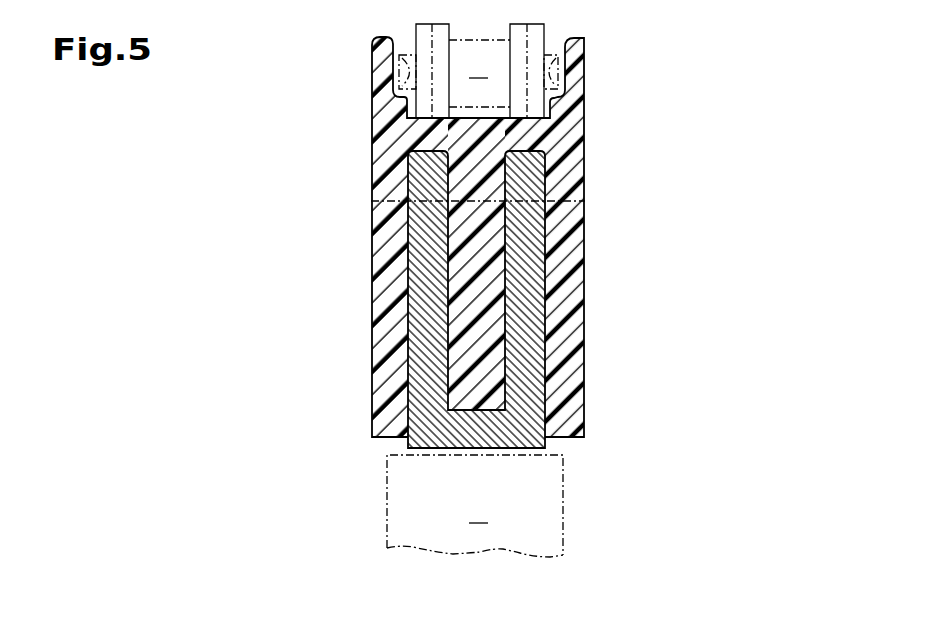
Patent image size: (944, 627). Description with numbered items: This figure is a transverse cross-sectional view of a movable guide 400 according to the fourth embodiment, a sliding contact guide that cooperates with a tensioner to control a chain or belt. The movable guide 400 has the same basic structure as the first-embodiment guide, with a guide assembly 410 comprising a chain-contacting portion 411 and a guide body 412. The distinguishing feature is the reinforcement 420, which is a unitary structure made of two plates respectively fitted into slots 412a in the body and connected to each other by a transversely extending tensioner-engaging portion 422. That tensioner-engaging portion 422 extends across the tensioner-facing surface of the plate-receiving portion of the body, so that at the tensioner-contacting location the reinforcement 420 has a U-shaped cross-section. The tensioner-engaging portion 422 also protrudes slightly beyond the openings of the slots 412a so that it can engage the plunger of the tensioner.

The movable guide 400 is at (342, 150).
The housing 410 is at (703, 45).
The terminal 411 is at (480, 117).
The housing body 412 is at (575, 192).
The slots 412a is at (443, 269).
The reinforcement 420 is at (418, 345).
The tensioner-engaging portion 422 is at (495, 450).